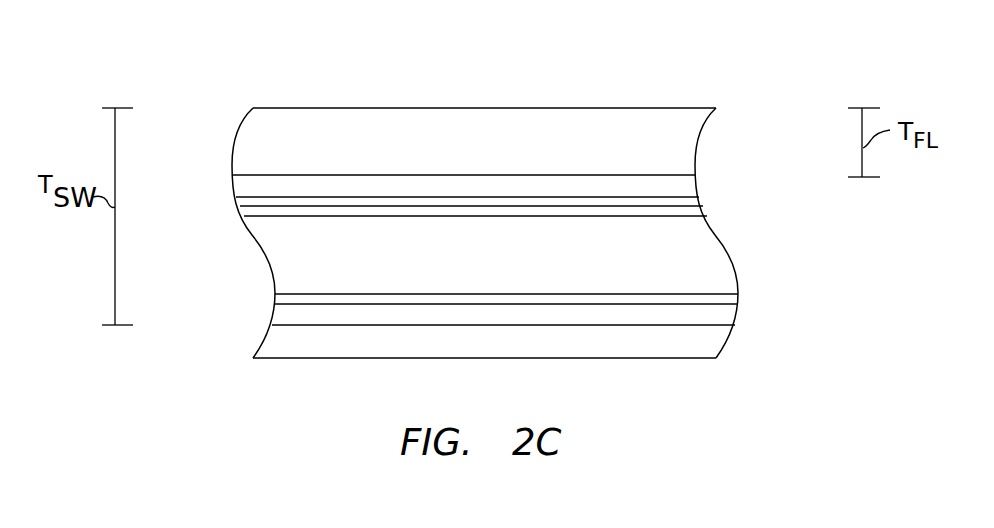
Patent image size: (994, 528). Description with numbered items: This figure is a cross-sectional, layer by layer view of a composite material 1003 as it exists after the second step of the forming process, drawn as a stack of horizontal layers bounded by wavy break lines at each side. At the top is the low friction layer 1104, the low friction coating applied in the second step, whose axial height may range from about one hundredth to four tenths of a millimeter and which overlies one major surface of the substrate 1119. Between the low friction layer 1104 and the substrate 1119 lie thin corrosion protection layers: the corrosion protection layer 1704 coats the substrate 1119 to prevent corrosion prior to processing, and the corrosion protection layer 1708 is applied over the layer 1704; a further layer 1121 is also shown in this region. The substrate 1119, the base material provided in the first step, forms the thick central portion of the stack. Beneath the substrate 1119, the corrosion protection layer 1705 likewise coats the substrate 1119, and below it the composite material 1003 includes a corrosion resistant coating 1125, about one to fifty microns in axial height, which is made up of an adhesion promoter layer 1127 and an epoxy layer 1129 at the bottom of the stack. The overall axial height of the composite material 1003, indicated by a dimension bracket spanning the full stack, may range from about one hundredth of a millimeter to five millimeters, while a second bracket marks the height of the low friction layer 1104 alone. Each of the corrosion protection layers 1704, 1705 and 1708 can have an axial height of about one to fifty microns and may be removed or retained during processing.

The composite material 1003 is at (826, 62).
The low friction layer 1104 is at (236, 143).
The second layer 1121 is at (233, 188).
The corrosion protection layer 1708 is at (700, 198).
The corrosion protection layer 1704 is at (702, 212).
The substrate 1119 is at (258, 243).
The corrosion protection layer 1705 is at (738, 298).
The adhesion promoter layer 1127 is at (275, 310).
The epoxy layer 1129 is at (264, 347).
The corrosion resistant coating 1125 is at (745, 303).